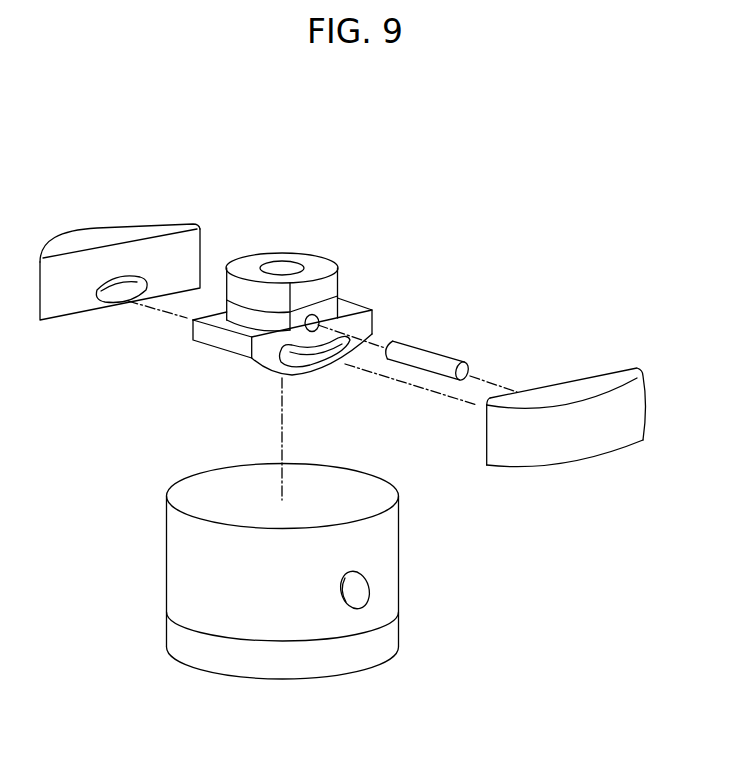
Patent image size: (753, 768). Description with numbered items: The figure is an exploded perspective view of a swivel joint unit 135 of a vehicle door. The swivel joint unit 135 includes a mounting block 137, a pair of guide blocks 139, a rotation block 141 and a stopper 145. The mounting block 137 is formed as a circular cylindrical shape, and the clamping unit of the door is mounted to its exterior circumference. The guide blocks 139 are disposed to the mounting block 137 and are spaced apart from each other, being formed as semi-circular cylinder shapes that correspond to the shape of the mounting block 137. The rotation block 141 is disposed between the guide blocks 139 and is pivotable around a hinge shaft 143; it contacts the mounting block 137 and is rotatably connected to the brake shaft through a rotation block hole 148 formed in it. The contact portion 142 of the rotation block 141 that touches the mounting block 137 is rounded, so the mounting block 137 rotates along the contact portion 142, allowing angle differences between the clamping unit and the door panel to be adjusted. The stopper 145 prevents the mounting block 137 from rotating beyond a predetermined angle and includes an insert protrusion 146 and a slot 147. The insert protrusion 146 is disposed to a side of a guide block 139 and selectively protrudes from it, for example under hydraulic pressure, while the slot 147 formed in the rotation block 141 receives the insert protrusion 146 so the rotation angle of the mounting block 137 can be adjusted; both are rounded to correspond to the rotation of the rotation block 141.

The swivel joint unit 135 is at (352, 217).
The mounting block 137 is at (380, 547).
The guide block 139 is at (103, 236).
The rotation block 141 is at (348, 308).
The contact portion 142 is at (222, 350).
The hinge shaft 143 is at (427, 358).
The stopper 145 is at (155, 478).
The insert protrusion 146 is at (116, 296).
The slot 147 is at (305, 368).
The rotation block hole 148 is at (284, 264).